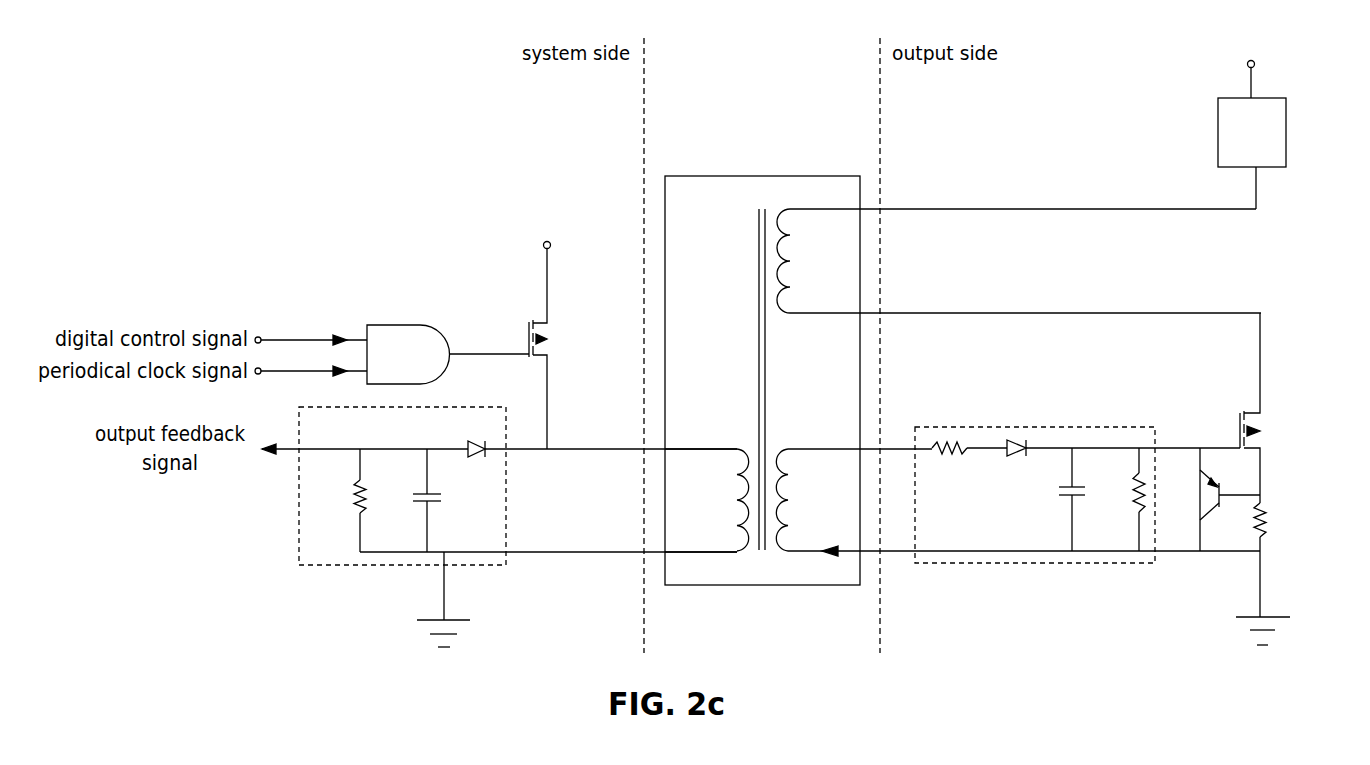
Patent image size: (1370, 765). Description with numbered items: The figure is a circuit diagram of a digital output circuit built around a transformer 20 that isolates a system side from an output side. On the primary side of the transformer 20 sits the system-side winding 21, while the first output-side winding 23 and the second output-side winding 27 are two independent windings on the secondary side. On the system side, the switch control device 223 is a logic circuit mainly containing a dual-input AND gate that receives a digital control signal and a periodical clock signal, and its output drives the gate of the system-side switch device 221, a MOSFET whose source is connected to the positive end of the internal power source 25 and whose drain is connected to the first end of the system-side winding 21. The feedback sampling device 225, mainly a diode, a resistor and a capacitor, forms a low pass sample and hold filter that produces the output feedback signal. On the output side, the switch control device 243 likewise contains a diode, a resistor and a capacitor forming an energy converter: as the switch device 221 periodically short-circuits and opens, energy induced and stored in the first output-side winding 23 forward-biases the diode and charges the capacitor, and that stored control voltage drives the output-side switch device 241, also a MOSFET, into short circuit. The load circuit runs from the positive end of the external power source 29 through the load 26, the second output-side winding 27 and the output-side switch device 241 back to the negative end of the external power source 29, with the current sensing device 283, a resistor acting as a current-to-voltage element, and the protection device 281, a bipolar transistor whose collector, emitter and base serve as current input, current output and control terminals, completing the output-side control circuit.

The transformer 20 is at (710, 176).
The system-side winding 21 is at (707, 500).
The first output-side winding 23 is at (988, 502).
The internal power source 25 is at (556, 231).
The load 26 is at (1216, 133).
The second output-side winding 27 is at (1019, 261).
The external power source 29 is at (1258, 53).
The system-side switch device 221 is at (540, 320).
The switch control device 223 is at (387, 322).
The feedback sampling device 225 is at (340, 570).
The output-side switch device 241 is at (1282, 432).
The switch control device 243 is at (1045, 427).
The protection device 281 is at (1188, 468).
The current sensing device 283 is at (1285, 528).